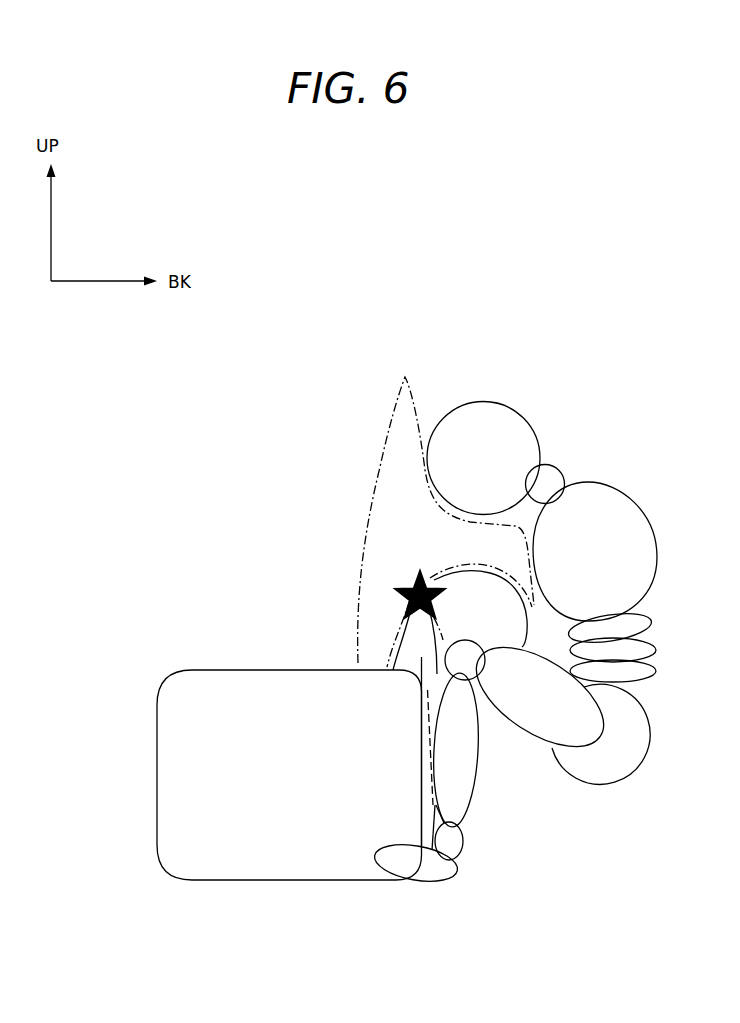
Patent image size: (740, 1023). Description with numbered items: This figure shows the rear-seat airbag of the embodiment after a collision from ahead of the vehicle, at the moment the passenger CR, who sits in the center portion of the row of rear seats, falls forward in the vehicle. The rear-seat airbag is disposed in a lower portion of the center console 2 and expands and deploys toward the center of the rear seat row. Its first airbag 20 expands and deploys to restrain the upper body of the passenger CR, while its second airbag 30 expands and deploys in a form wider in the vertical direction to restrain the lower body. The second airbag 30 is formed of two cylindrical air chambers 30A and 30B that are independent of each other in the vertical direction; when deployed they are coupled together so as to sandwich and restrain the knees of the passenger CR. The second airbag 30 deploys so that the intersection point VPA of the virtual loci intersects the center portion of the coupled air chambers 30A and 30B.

The center console 2 is at (235, 753).
The first airbag 20 is at (407, 480).
The second airbag 30 is at (420, 683).
The cylindrical air chamber 30A is at (493, 598).
The cylindrical air chamber 30B is at (413, 650).
The intersection point VPA is at (403, 597).
The passenger CR is at (477, 433).